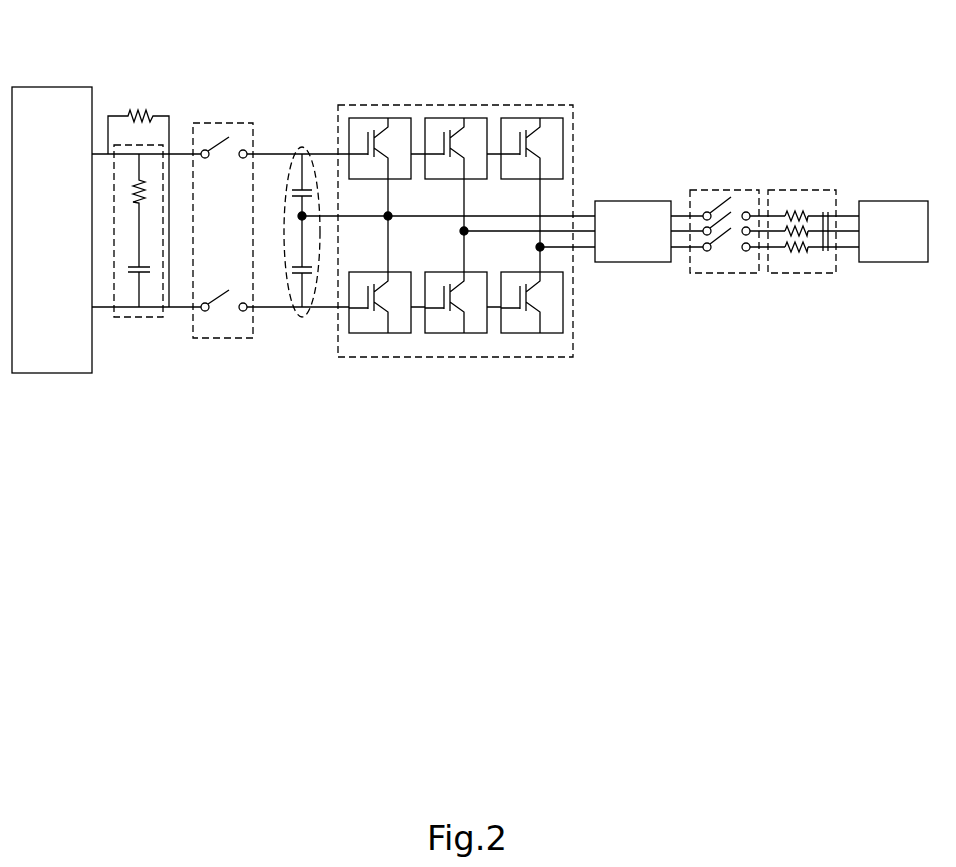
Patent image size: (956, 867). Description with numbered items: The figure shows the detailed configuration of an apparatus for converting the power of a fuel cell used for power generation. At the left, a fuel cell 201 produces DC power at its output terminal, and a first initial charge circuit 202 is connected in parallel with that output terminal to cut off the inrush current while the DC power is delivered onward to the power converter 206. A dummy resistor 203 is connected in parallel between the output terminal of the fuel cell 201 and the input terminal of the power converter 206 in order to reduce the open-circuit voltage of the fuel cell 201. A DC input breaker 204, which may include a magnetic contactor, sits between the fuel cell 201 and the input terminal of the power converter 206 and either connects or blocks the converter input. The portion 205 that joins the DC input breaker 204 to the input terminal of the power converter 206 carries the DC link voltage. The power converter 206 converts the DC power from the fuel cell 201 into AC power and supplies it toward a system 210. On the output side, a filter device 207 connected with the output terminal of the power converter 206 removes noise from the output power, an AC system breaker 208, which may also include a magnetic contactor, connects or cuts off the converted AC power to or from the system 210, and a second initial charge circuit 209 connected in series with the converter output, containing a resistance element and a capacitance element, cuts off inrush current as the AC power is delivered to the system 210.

The fuel cell 201 is at (50, 86).
The first initial charge circuit 202 is at (138, 318).
The dummy resistor 203 is at (156, 115).
The DC input breaker 204 is at (224, 122).
The portion (DC link) 205 is at (301, 149).
The power converter 206 is at (455, 104).
The filter device 207 is at (633, 200).
The AC system breaker 208 is at (725, 189).
The second initial charge circuit 209 is at (802, 189).
The system 210 is at (895, 200).